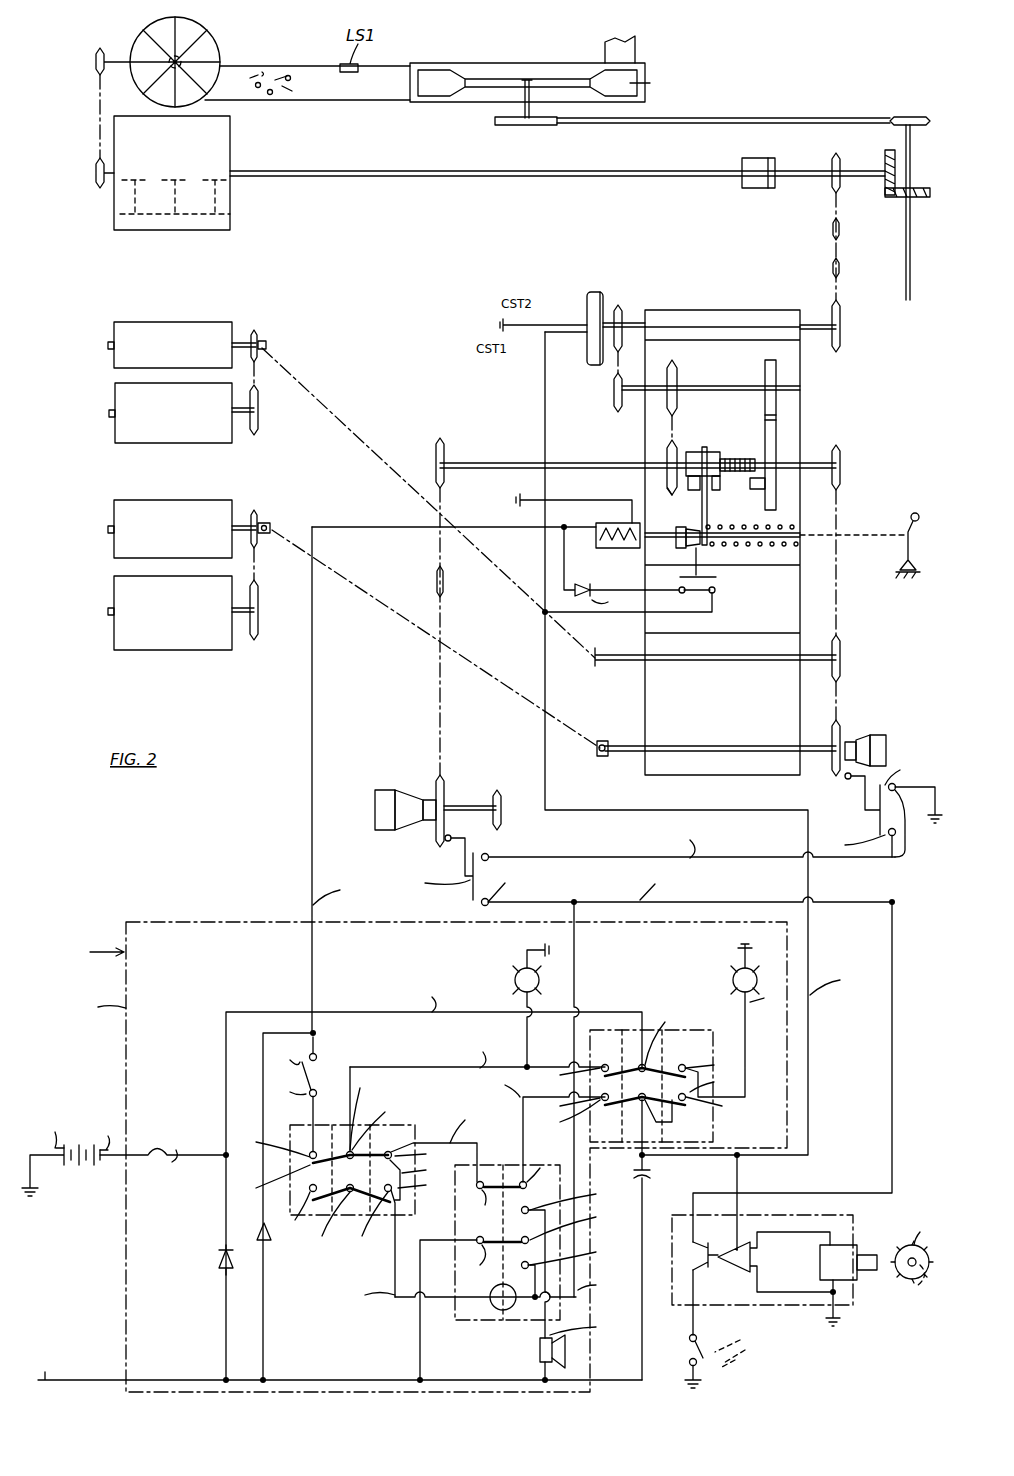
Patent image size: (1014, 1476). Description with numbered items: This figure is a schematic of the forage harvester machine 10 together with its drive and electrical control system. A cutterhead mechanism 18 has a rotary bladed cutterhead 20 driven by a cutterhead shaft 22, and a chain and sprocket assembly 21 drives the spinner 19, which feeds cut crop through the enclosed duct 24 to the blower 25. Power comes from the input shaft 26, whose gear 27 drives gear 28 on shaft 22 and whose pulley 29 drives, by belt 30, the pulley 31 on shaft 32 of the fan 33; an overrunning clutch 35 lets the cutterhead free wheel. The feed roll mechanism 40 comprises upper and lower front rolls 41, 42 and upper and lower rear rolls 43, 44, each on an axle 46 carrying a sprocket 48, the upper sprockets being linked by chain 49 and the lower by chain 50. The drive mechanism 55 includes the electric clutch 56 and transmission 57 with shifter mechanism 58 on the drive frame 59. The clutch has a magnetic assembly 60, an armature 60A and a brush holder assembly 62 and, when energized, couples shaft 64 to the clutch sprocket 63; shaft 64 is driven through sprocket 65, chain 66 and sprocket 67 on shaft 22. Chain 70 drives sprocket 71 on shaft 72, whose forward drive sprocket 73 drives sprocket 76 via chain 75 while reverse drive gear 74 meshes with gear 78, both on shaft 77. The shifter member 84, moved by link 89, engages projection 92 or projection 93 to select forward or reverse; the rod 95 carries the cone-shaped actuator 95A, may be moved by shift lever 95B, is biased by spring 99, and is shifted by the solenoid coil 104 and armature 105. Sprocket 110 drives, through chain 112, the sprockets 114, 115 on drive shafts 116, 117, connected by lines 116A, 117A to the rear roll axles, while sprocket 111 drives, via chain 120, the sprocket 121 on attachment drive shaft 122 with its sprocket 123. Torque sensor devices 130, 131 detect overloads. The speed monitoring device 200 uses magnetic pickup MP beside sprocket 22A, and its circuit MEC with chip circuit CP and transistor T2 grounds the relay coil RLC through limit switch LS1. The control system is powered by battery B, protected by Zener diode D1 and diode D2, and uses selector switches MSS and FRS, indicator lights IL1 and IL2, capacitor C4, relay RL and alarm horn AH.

The forage harvester machine 10 is at (694, 48).
The cutterhead mechanism 18 is at (202, 188).
The spinner 19 is at (200, 45).
The rotary bladed cutterhead 20 is at (205, 225).
The chain and sprocket assembly 21 is at (82, 86).
The cutterhead shaft 22 is at (290, 170).
The sprocket 22A is at (95, 177).
The enclosed duct 24 is at (280, 66).
The blower 25 is at (495, 62).
The input shaft 26 is at (904, 278).
The gear 27 is at (922, 192).
The gear 28 is at (884, 155).
The pulley 29 is at (920, 116).
The endless flexible drive belt 30 is at (795, 100).
The pulley 31 is at (540, 125).
The shaft 32 is at (520, 108).
The fan 33 is at (650, 90).
The overrunning clutch 35 is at (742, 182).
The feed roll mechanism 40 is at (164, 470).
The upper front feed roll 41 is at (114, 582).
The lower front feed roll 42 is at (115, 392).
The upper rear feed roll 43 is at (114, 512).
The lower rear feed roll 44 is at (114, 334).
The shaft or axle 46 is at (254, 336).
The sprocket 48 is at (262, 338).
The endless flexible drive chain 49 is at (262, 565).
The endless flexible drive chain 50 is at (258, 372).
The drive mechanism 55 is at (490, 302).
The electric clutch 56 is at (594, 278).
The transmission 57 is at (482, 846).
The shifter mechanism 58 is at (720, 440).
The feed roll drive frame 59 is at (802, 402).
The two-pole magnetic assembly 60 is at (590, 292).
The armature 60A is at (604, 295).
The brush holder assembly 62 is at (588, 310).
The clutch sprocket 63 is at (622, 308).
The shaft 64 is at (728, 318).
The sprocket 65 is at (845, 342).
The endless flexible chain 66 is at (832, 228).
The sprocket 67 is at (830, 185).
The endless flexible chain 70 is at (612, 372).
The sprocket 71 is at (612, 393).
The shaft 72 is at (708, 392).
The forward drive sprocket 73 is at (680, 370).
The reverse drive gear 74 is at (778, 370).
The endless flexible chain 75 is at (668, 420).
The sprocket 76 is at (667, 448).
The shaft 77 is at (560, 462).
The gear 78 is at (778, 432).
The shifter member 84 is at (712, 452).
The shifter arm or link 89 is at (708, 506).
The projection 92 is at (668, 483).
The projection 93 is at (766, 485).
The rod 95 is at (745, 545).
The cone-shaped actuator 95A is at (680, 526).
The shift lever 95B is at (910, 518).
The helical compression spring 99 is at (775, 528).
The solenoid coil 104 is at (628, 548).
The armature 105 is at (622, 524).
The sprocket 110 is at (842, 466).
The sprocket 111 is at (436, 448).
The endless flexible chain 112 is at (840, 502).
The sprocket 114 is at (842, 654).
The sprocket 115 is at (826, 775).
The drive shaft 116 is at (722, 660).
The line 116A is at (340, 412).
The drive shaft 117 is at (740, 748).
The line 117A is at (332, 580).
The endless flexible chain 120 is at (436, 570).
The sprocket 121 is at (430, 830).
The attachment drive shaft 122 is at (468, 803).
The sprocket 123 is at (501, 790).
The torque sensor device 130 is at (886, 742).
The torque sensor device 131 is at (382, 790).
The speed monitoring device 200 is at (908, 1298).
The battery B is at (84, 1148).
The Zener diode D1 is at (215, 1260).
The diode D2 is at (268, 1240).
The forward/reverse selector switch FRS is at (405, 1125).
The indicator light IL1 is at (740, 970).
The indicator light IL2 is at (518, 972).
The manual selector switch MSS is at (712, 1020).
The capacitor C4 is at (650, 1174).
The relay RL is at (490, 1256).
The relay coil RLC is at (497, 1310).
The alarm horn AH is at (540, 1352).
The electric circuit MEC is at (783, 1264).
The external transistor T2 is at (706, 1247).
The chip circuit CP is at (732, 1270).
The magnetic pickup device MP is at (868, 1270).
The limit switch LS1 is at (710, 1338).